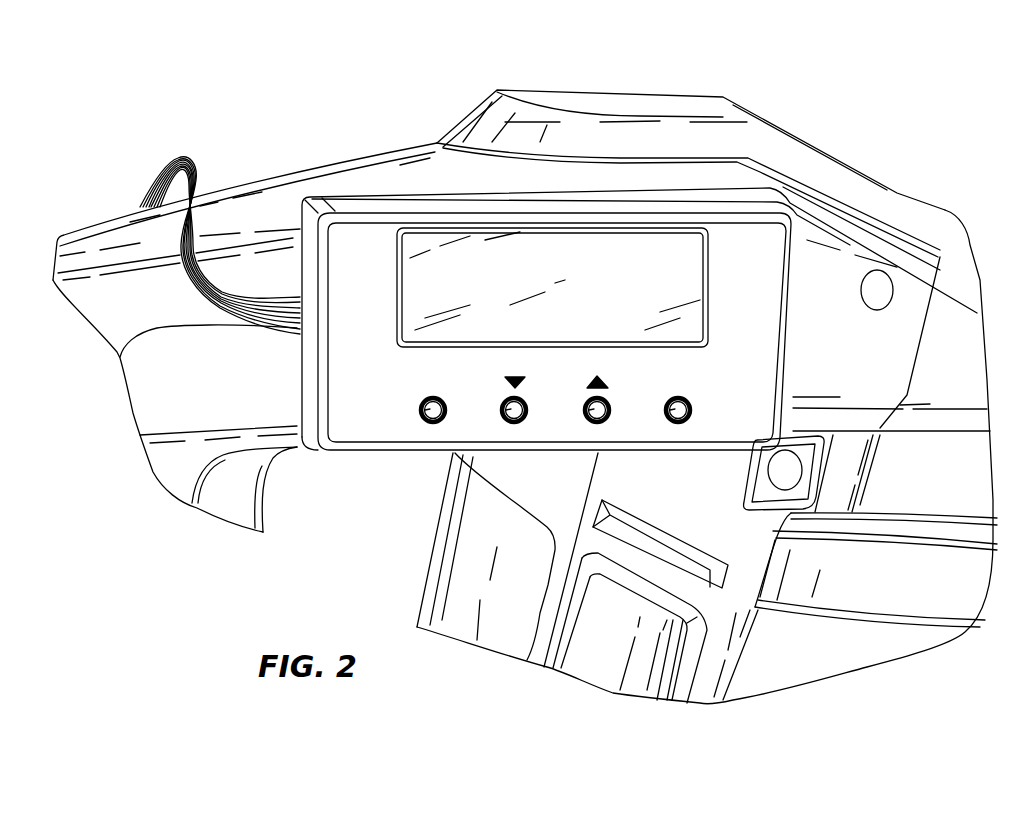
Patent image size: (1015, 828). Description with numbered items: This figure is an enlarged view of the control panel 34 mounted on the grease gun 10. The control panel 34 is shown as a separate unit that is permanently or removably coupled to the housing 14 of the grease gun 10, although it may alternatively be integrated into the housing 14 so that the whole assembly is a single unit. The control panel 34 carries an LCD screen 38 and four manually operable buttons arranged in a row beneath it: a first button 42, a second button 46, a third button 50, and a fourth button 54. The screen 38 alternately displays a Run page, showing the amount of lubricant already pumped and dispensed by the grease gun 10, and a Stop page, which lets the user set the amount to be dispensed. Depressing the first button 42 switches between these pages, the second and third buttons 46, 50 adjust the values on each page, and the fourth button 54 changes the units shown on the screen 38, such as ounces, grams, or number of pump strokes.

The grease gun 10 is at (523, 397).
The housing 14 is at (868, 580).
The control panel 34 is at (368, 257).
The LCD screen 38 is at (627, 268).
The first button 42 is at (420, 412).
The second button 46 is at (500, 412).
The third button 50 is at (583, 413).
The fourth button 54 is at (683, 413).